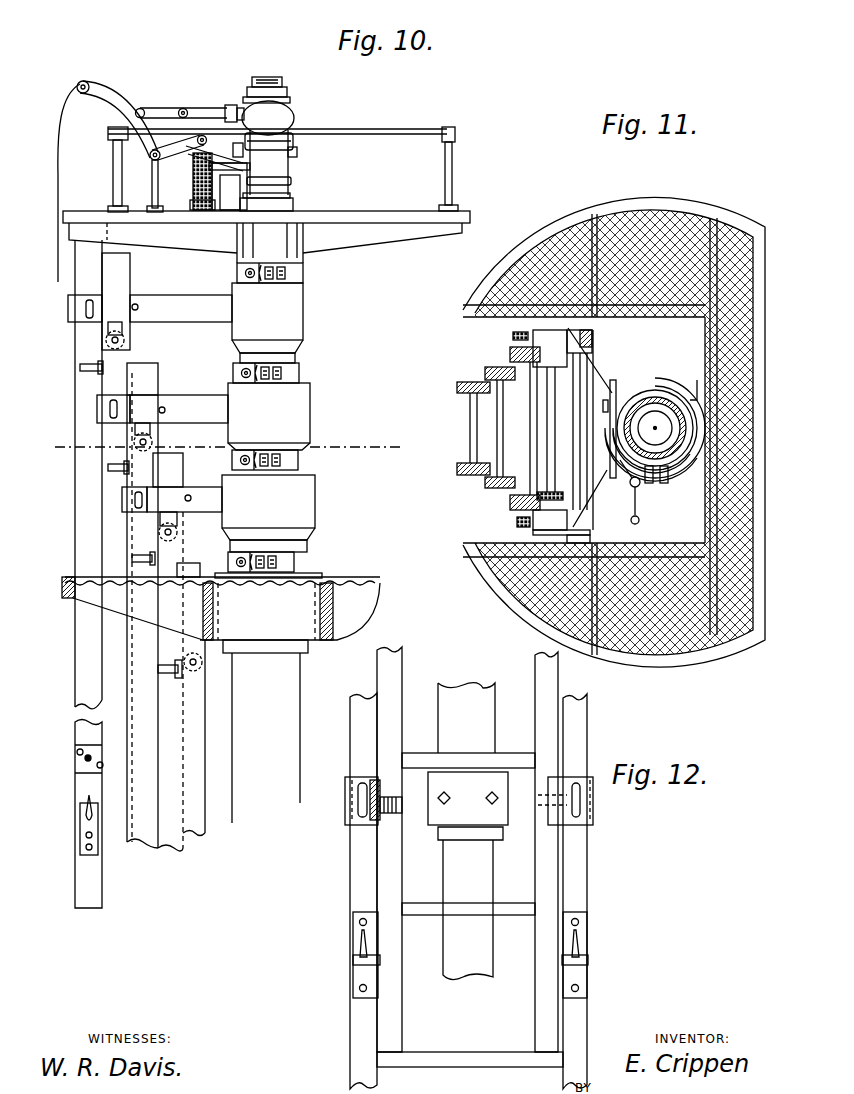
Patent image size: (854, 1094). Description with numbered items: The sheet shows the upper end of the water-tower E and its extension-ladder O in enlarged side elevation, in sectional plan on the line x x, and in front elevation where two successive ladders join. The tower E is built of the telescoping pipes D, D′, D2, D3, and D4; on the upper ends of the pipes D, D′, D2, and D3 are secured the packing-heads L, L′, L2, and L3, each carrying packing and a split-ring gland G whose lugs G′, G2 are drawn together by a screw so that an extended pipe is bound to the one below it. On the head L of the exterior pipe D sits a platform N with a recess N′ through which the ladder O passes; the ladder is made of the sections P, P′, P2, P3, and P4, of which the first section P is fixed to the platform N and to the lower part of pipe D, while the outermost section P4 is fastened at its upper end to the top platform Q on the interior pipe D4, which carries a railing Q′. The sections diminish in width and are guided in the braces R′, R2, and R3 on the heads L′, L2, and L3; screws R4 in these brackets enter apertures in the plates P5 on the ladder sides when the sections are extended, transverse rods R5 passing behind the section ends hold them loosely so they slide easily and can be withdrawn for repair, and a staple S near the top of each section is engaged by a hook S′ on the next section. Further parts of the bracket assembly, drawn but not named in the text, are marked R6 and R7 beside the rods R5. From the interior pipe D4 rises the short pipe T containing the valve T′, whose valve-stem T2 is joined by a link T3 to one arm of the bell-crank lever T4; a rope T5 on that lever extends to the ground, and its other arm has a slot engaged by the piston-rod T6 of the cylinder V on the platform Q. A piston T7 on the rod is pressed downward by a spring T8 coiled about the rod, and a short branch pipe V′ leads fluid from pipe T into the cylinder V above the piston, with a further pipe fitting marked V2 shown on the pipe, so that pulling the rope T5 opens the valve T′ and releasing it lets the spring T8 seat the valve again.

In FIG. 10, the short pipe T is at (274, 77).
In FIG. 10, the valve T′ is at (285, 114).
In FIG. 10, the valve-stem T2 is at (210, 107).
In FIG. 10, the link T3 is at (166, 108).
In FIG. 10, the bell-crank lever T4 is at (113, 87).
In FIG. 10, the rope T5 is at (60, 142).
In FIG. 10, the piston-rod T6 is at (188, 155).
In FIG. 10, the piston T7 is at (198, 203).
In FIG. 10, the spring T8 is at (192, 183).
In FIG. 10, the cylinder V is at (229, 186).
In FIG. 10, the short branch pipe V′ is at (300, 177).
In FIG. 10, the union V2 is at (272, 157).
In FIG. 10, the top platform Q is at (349, 210).
In FIG. 10, the railing Q′ is at (449, 126).
In FIG. 10, the water-tower E is at (259, 235).
In FIG. 11, the water-tower E is at (700, 206).
In FIG. 10, the exterior pipe D is at (266, 738).
In FIG. 10, the extension-pipe D′ is at (300, 545).
In FIG. 11, the extension-pipe D′ is at (667, 484).
In FIG. 12, the extension-pipe D′ is at (468, 910).
In FIG. 10, the extension-pipe D2 is at (312, 443).
In FIG. 11, the extension-pipe D2 is at (645, 405).
In FIG. 12, the extension-pipe D2 is at (466, 718).
In FIG. 10, the extension-pipe D3 is at (290, 358).
In FIG. 11, the extension-pipe D3 is at (655, 411).
In FIG. 10, the interior pipe D4 is at (290, 257).
In FIG. 11, the interior pipe D4 is at (672, 395).
In FIG. 10, the gland G is at (300, 274).
In FIG. 11, the lug G′ is at (692, 404).
In FIG. 11, the lug G2 is at (638, 487).
In FIG. 10, the packing-head L is at (300, 636).
In FIG. 10, the packing-head L′ is at (268, 507).
In FIG. 12, the packing-head L′ is at (468, 806).
In FIG. 10, the packing-head L2 is at (269, 416).
In FIG. 10, the packing-head L3 is at (267, 318).
In FIG. 11, the arm R is at (548, 486).
In FIG. 12, the arm R is at (468, 760).
In FIG. 10, the brace R′ is at (210, 490).
In FIG. 11, the brace R′ is at (598, 380).
In FIG. 12, the brace R′ is at (345, 780).
In FIG. 10, the brace R2 is at (208, 397).
In FIG. 10, the brace R3 is at (181, 308).
In FIG. 10, the screw R4 is at (86, 308).
In FIG. 12, the screw R4 is at (358, 800).
In FIG. 10, the transversely-extending rod R5 is at (138, 304).
In FIG. 11, the transversely-extending rod R5 is at (568, 420).
In FIG. 10, the boss R6 is at (125, 340).
In FIG. 11, the boss R6 is at (510, 354).
In FIG. 10, the bracket R7 is at (120, 330).
In FIG. 10, the staple S is at (80, 368).
In FIG. 12, the staple S is at (353, 960).
In FIG. 10, the hook S′ is at (80, 820).
In FIG. 12, the hook S′ is at (360, 940).
In FIG. 10, the platform N is at (222, 613).
In FIG. 11, the platform N is at (737, 654).
In FIG. 10, the recess N′ is at (62, 590).
In FIG. 11, the recess N′ is at (510, 526).
In FIG. 10, the extension-ladder O is at (47, 633).
In FIG. 10, the ladder-section P is at (200, 732).
In FIG. 11, the ladder-section P is at (595, 537).
In FIG. 12, the ladder-section P is at (470, 857).
In FIG. 10, the ladder-section P′ is at (167, 681).
In FIG. 11, the ladder-section P′ is at (533, 534).
In FIG. 12, the ladder-section P′ is at (363, 1049).
In FIG. 10, the ladder-section P2 is at (137, 715).
In FIG. 11, the ladder-section P2 is at (515, 345).
In FIG. 12, the ladder-section P2 is at (396, 1012).
In FIG. 10, the ladder-section P3 is at (128, 672).
In FIG. 11, the ladder-section P3 is at (497, 433).
In FIG. 10, the ladder-section P4 is at (88, 474).
In FIG. 11, the ladder-section P4 is at (470, 412).
In FIG. 10, the plate P5 is at (75, 760).
In FIG. 12, the plate P5 is at (382, 792).
In FIG. 10, the section line x is at (225, 446).